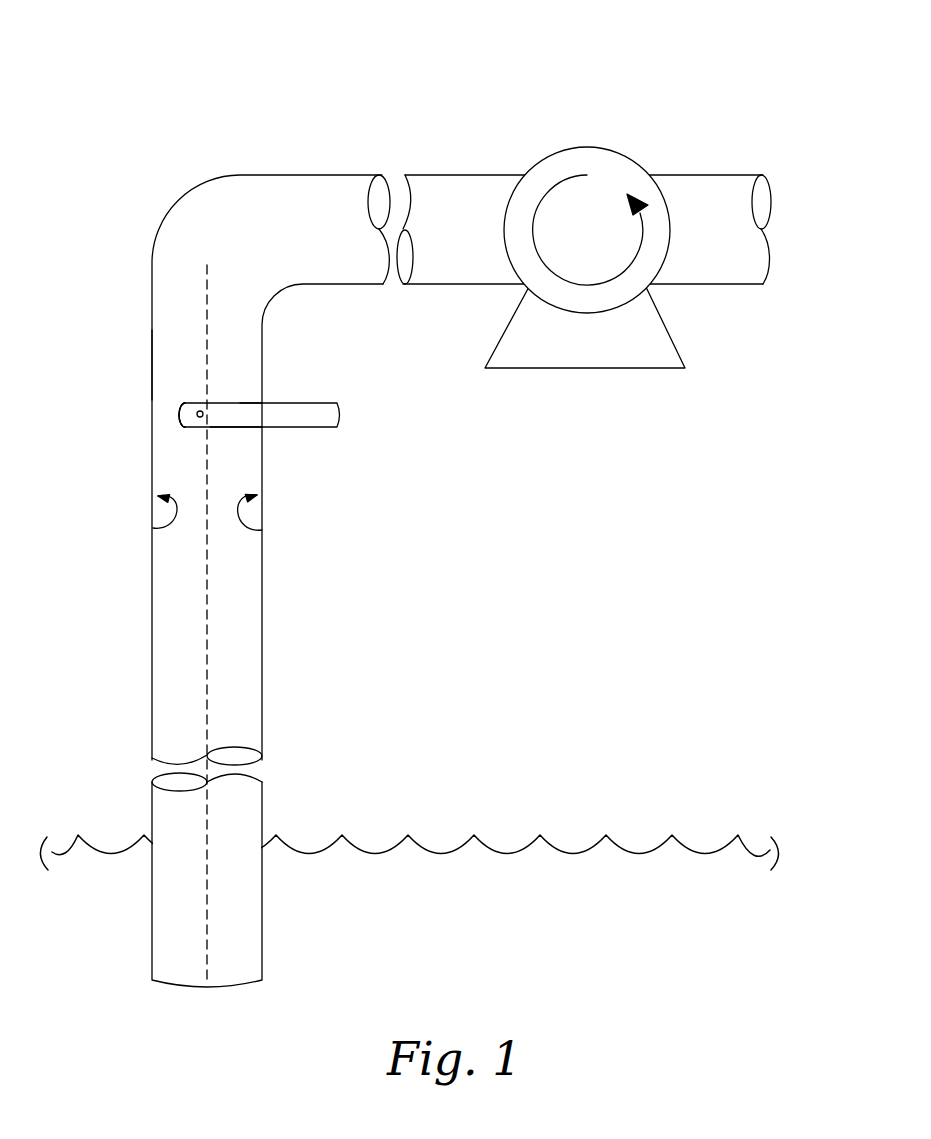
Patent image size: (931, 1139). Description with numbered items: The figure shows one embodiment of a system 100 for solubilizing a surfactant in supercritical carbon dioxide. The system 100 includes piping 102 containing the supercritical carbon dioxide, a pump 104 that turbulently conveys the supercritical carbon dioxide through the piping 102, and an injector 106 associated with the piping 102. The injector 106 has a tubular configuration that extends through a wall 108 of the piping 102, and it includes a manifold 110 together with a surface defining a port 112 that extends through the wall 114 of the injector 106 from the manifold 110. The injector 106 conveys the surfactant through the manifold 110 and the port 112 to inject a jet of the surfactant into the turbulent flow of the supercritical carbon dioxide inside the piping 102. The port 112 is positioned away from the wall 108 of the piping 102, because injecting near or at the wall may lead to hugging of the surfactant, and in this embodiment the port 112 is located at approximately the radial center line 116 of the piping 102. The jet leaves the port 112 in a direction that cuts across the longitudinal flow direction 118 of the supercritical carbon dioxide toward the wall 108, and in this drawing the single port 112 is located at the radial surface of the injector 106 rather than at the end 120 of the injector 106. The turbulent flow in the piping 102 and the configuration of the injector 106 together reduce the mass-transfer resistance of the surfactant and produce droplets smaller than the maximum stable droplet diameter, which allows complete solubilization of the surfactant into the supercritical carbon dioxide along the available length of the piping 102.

The system 100 is at (108, 75).
The piping 102 is at (310, 180).
The pump 104 is at (623, 138).
The injector 106 is at (216, 377).
The wall of the piping 108 is at (153, 528).
The manifold 110 is at (224, 420).
The port 112 is at (198, 398).
The wall of the injector 114 is at (247, 402).
The radial center line 116 is at (203, 638).
The longitudinal flow direction 118 is at (178, 352).
The end of the injector 120 is at (175, 414).